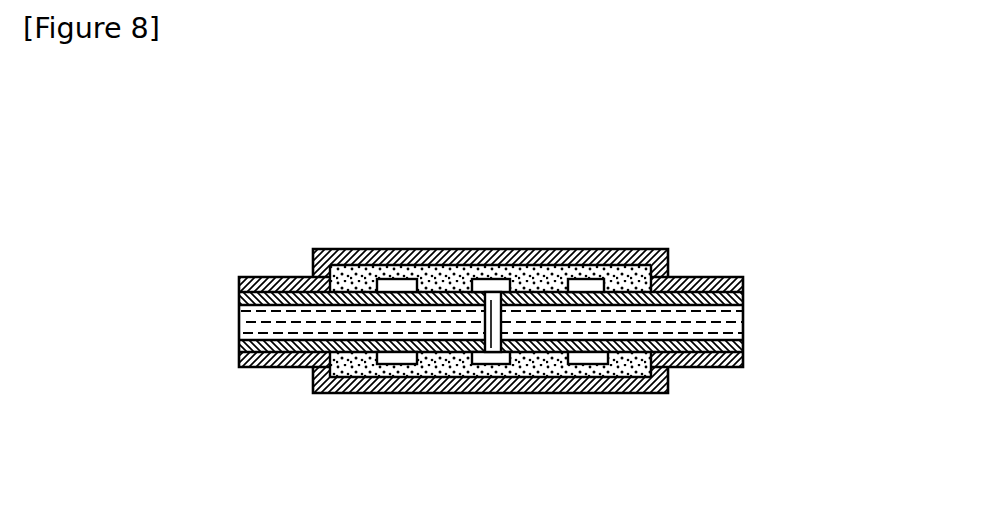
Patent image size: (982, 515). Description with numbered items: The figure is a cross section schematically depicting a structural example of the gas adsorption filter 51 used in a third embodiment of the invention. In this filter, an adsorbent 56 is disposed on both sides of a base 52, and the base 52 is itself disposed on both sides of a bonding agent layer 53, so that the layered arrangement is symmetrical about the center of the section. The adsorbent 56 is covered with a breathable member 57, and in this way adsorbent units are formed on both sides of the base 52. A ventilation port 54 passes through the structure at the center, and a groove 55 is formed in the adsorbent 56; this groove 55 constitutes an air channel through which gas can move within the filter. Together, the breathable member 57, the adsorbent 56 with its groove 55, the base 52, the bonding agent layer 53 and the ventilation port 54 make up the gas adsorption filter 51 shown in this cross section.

The gas adsorption filter 51 is at (419, 241).
The base 52 is at (722, 321).
The bonding agent layer 53 is at (743, 293).
The ventilation port 54 is at (495, 357).
The groove 55 is at (589, 278).
The adsorbent 56 is at (638, 272).
The breathable member 57 is at (490, 249).